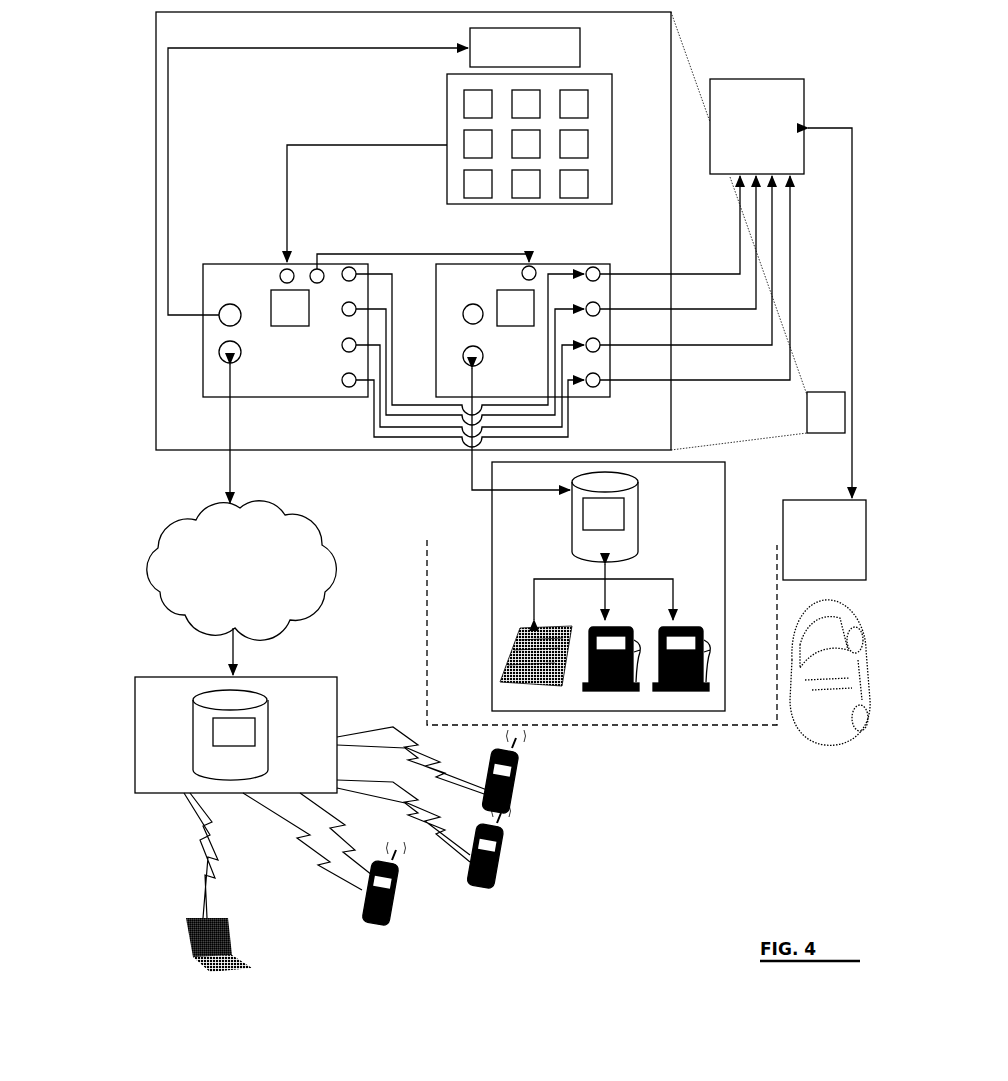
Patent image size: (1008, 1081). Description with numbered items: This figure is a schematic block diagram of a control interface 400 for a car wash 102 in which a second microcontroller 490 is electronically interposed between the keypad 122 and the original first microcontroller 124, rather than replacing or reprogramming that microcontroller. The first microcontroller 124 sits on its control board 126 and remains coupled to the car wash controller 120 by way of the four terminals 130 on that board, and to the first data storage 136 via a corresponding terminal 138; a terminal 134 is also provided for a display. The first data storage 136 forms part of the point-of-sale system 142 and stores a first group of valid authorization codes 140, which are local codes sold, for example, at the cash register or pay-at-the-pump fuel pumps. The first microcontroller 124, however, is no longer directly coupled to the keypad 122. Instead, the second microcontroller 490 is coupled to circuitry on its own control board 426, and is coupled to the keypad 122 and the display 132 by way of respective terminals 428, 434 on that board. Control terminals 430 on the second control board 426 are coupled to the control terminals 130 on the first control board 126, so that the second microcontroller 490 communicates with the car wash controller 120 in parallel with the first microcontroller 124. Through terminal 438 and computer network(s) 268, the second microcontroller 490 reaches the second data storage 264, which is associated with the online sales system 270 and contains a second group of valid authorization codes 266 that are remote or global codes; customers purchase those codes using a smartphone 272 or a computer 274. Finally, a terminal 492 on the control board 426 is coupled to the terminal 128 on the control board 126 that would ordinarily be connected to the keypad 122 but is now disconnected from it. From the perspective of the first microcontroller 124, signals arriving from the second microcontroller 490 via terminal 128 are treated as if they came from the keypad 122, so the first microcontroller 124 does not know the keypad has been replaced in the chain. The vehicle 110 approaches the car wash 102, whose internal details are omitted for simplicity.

The display 132 is at (570, 58).
The keypad 122 is at (470, 208).
The car wash controller 120 is at (773, 159).
The control interface 400 is at (842, 422).
The control board 426 is at (302, 389).
The second microcontroller 490 is at (305, 317).
The terminal 428 is at (280, 277).
The terminal 492 is at (314, 269).
The terminal 434 is at (222, 322).
The terminal 438 is at (222, 358).
The control terminals 430 is at (343, 280).
The control board 126 is at (527, 389).
The first microcontroller 124 is at (531, 317).
The terminal 128 is at (522, 275).
The terminal 134 is at (465, 320).
The terminal 138 is at (465, 360).
The terminals 130 is at (600, 277).
The first data storage 136 is at (620, 556).
The valid authorization codes 140 is at (618, 523).
The point-of-sale (POS) system 142 is at (538, 707).
The car wash 102 is at (840, 561).
The vehicle 110 is at (826, 709).
The computer network(s) 268 is at (248, 596).
The online sales system 270 is at (318, 710).
The second data storage 264 is at (246, 774).
The valid authorization codes 266 is at (248, 743).
The smartphone 272 is at (520, 782).
The computer 274 is at (240, 952).